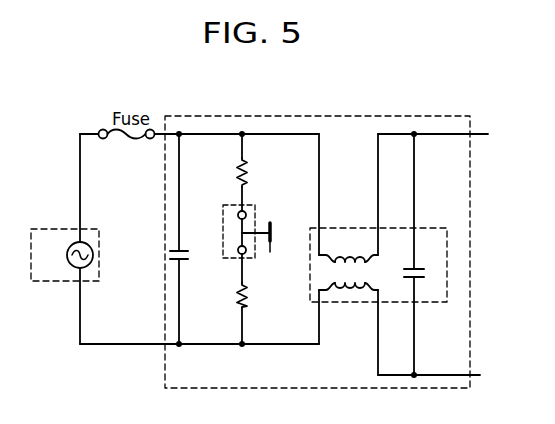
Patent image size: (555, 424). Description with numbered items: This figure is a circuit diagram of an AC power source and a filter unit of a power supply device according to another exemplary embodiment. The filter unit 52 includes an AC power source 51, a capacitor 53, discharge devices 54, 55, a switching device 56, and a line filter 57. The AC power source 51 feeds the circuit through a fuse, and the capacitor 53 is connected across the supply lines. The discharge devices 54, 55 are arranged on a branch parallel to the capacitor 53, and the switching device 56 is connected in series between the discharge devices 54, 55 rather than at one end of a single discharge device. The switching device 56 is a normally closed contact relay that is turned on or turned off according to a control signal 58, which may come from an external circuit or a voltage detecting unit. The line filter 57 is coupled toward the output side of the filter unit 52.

The AC power source 51 is at (63, 228).
The filter unit 52 is at (412, 114).
The capacitor 53 is at (184, 261).
The discharge device 54 is at (250, 172).
The discharge device 55 is at (248, 295).
The switching device 56 is at (229, 206).
The line filter 57 is at (339, 226).
The control signal 58 is at (262, 251).